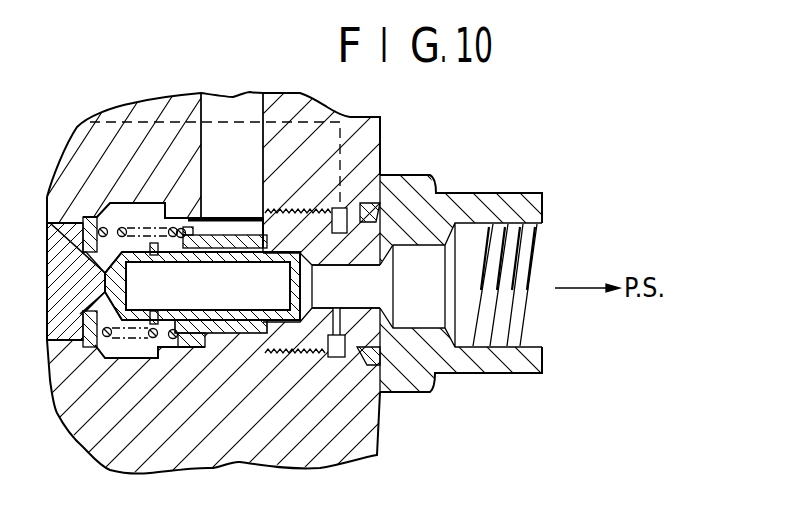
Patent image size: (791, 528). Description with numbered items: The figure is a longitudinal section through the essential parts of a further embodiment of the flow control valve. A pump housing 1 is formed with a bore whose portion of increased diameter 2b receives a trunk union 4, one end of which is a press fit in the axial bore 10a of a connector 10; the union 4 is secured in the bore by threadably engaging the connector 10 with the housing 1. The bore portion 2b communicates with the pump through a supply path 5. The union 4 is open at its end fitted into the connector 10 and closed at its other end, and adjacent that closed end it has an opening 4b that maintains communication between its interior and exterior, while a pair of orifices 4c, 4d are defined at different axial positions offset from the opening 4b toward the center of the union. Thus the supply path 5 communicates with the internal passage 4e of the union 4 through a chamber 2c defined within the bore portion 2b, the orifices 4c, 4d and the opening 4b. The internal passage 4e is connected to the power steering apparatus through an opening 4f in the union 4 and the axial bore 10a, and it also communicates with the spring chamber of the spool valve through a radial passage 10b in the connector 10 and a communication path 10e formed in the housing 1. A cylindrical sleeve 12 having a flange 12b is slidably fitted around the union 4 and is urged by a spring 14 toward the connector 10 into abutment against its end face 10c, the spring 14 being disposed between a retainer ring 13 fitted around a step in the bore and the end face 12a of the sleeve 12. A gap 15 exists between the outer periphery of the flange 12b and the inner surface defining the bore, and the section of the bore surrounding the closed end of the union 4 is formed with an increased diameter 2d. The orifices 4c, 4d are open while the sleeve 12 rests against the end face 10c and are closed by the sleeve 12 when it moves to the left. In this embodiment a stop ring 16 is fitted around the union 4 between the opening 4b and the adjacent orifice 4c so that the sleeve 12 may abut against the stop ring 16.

The pump housing 1 is at (381, 157).
The bore portion of increased diameter 2b is at (188, 347).
The chamber 2c is at (145, 212).
The increased diameter section 2d is at (120, 356).
The trunk union 4 is at (240, 324).
The opening 4b is at (135, 236).
The orifice 4c is at (163, 350).
The orifice 4d is at (178, 255).
The internal passage 4e is at (259, 318).
The opening 4f is at (309, 306).
The supply path 5 is at (250, 96).
The connector 10 is at (477, 204).
The axial bore 10a is at (371, 306).
The radial passage 10b is at (335, 357).
The end face 10c is at (253, 202).
The communication path 10e is at (157, 122).
The cylindrical sleeve 12 is at (171, 282).
The end face of the sleeve 12a is at (175, 228).
The flange 12b is at (190, 312).
The retainer ring 13 is at (90, 216).
The spring 14 is at (175, 342).
The gap 15 is at (213, 219).
The stop ring 16 is at (152, 320).